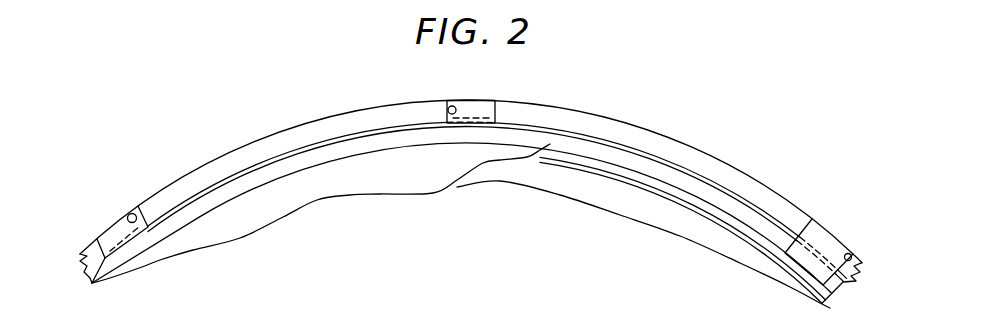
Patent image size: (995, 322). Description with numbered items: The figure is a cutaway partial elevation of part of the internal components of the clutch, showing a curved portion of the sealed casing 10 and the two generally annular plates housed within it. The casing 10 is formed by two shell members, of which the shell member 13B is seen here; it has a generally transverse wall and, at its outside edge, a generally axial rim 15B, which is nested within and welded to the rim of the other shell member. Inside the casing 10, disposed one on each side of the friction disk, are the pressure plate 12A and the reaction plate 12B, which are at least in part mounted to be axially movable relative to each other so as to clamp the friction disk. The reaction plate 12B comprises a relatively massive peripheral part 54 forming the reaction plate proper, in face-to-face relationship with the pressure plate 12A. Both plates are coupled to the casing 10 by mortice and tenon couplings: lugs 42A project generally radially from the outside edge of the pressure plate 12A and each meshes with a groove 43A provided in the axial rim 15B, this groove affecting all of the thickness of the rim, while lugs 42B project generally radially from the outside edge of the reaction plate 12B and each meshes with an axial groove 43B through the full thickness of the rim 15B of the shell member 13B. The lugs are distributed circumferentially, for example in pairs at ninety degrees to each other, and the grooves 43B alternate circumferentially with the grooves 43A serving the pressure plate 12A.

The casing 10 is at (627, 116).
The pressure plate 12A is at (361, 181).
The reaction plate 12B is at (646, 204).
The shell member 13B is at (776, 183).
The axial rim 15B is at (703, 165).
The lug 42A is at (488, 110).
The lug 42B is at (113, 238).
The groove 43A is at (452, 106).
The axial groove 43B is at (132, 213).
The peripheral part 54 is at (583, 190).